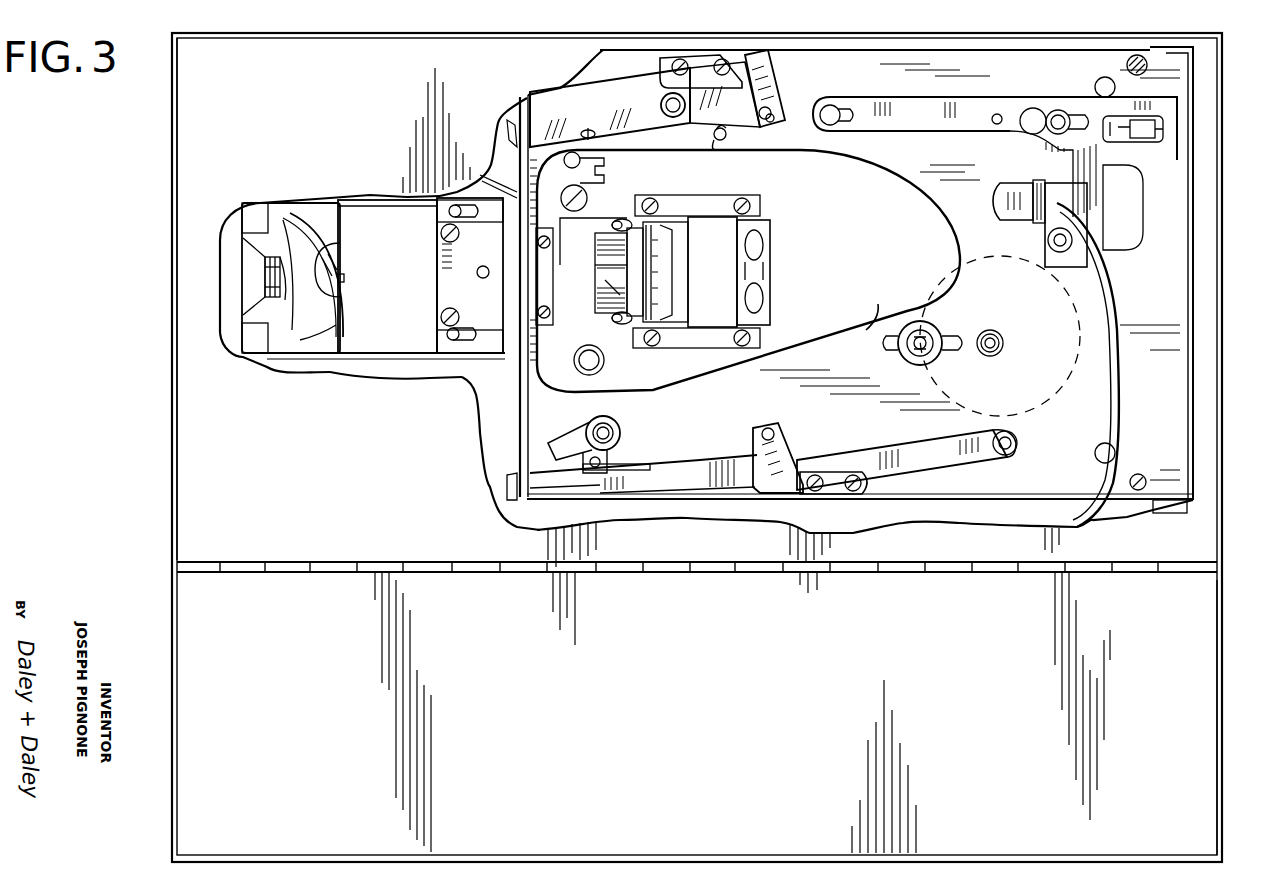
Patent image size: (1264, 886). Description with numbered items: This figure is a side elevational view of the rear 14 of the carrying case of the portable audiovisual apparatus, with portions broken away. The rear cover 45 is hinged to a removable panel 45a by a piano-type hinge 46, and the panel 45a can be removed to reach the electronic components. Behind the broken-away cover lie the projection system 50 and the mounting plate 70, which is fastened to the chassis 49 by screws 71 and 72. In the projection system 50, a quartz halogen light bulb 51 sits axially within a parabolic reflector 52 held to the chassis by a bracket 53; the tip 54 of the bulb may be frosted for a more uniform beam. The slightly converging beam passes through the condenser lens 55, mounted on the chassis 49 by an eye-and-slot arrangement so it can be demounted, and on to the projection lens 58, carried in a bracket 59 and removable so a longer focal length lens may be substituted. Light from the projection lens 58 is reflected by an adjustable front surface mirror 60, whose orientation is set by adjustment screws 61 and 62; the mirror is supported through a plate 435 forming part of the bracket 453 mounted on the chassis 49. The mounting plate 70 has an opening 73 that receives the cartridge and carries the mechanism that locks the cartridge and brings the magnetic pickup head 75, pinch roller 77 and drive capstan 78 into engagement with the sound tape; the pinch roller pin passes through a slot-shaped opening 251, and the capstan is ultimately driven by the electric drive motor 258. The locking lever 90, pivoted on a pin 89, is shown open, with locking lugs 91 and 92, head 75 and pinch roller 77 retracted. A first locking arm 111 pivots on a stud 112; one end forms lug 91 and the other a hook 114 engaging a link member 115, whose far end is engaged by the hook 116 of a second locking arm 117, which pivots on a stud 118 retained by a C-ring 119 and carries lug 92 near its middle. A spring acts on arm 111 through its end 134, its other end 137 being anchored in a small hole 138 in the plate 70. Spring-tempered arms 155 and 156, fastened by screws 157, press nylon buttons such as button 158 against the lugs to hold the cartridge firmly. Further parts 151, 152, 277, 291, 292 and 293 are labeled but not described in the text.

The rear of the carrying case 14 is at (703, 655).
The rear cover 45 is at (279, 456).
The removable panel 45a is at (1207, 643).
The piano-type hinge 46 is at (305, 573).
The chassis 49 is at (410, 378).
The projection system 50 is at (372, 186).
The quartz halogen light bulb 51 is at (333, 264).
The parabolic reflector 52 is at (310, 243).
The bracket 53 is at (303, 373).
The tip of bulb 54 is at (343, 279).
The condenser lens 55 is at (542, 297).
The projection lens 58 is at (609, 287).
The bracket 59 is at (633, 250).
The adjustable front surface mirror 60 is at (677, 320).
The adjustment screw 61 is at (621, 218).
The adjustment screw 62 is at (621, 325).
The mounting plate 70 is at (926, 492).
The screw 71 is at (1138, 56).
The screw 72 is at (1138, 475).
The opening 73 is at (872, 320).
The magnetic pickup head 75 is at (995, 200).
The pinch roller 77 is at (938, 356).
The drive capstan 78 is at (1003, 344).
The pin 89 is at (612, 428).
The locking lever 90 is at (578, 446).
The cartridge locking lug 91 is at (772, 120).
The cartridge locking lug 92 is at (783, 432).
The first locking arm 111 is at (640, 112).
The stud 112 is at (667, 96).
The hook 114 is at (505, 110).
The link member 115 is at (513, 423).
The hook 116 is at (505, 486).
The second locking arm 117 is at (556, 490).
The stud 118 is at (1012, 455).
The C-ring 119 is at (1017, 442).
The spring end 134 is at (588, 128).
The spring end 137 is at (727, 135).
The small hole 138 is at (718, 147).
The lever 151 is at (603, 482).
The bar 152 is at (632, 462).
The arm 155 is at (776, 80).
The arm 156 is at (796, 466).
The screws 157 is at (722, 55).
The nylon button 158 is at (773, 108).
The opening 251 is at (936, 340).
The electric drive motor 258 is at (1062, 382).
The bar edge 277 is at (908, 120).
The bar 291 is at (838, 106).
The pivot 292 is at (1058, 110).
The bracket 293 is at (1058, 253).
The plate 435 is at (726, 292).
The bracket 453 is at (754, 206).